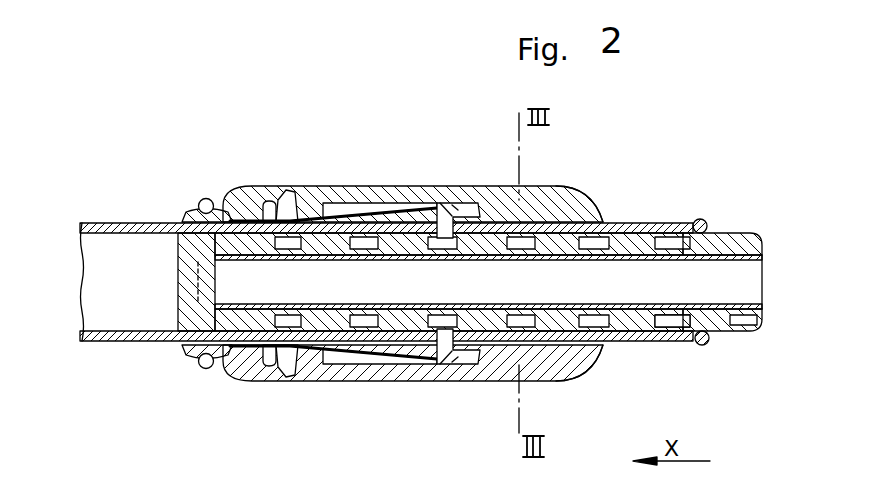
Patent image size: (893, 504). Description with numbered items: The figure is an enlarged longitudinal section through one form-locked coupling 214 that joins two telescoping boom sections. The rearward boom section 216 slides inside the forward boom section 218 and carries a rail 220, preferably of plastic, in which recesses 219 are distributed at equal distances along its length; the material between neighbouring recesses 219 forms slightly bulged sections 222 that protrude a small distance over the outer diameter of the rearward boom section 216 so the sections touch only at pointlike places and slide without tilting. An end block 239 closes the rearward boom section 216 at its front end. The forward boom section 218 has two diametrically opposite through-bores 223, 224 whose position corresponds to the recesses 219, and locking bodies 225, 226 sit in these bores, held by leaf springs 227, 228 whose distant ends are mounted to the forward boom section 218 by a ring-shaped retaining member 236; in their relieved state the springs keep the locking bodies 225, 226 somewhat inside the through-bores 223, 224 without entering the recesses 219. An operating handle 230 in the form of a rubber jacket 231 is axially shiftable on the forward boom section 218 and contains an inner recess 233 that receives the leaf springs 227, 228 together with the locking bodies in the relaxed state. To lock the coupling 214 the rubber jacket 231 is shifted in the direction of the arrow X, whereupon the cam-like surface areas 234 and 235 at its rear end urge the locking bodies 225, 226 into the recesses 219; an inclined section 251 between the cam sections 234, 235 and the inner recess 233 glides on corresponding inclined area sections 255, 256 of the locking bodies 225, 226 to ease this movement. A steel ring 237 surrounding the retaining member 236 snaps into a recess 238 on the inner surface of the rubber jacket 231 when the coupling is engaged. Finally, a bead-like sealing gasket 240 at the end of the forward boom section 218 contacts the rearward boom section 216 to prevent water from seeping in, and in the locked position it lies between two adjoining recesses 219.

The form-locked coupling 214 is at (267, 188).
The rearward boom section 216 is at (743, 257).
The forward boom section 218 is at (102, 231).
The recesses 219 is at (668, 322).
The rail 220 is at (713, 240).
The bulged sections 222 is at (640, 240).
The through-bore 223 is at (457, 362).
The through-bore 224 is at (456, 212).
The locking body 225 is at (418, 365).
The locking body 226 is at (438, 212).
The leaf spring 227 is at (368, 365).
The leaf spring 228 is at (383, 205).
The operating handle 230 is at (232, 382).
The rubber jacket 231 is at (299, 383).
The inner recess 233 is at (345, 194).
The surface area (cam section) 234 is at (590, 195).
The surface area (cam section) 235 is at (588, 370).
The ring-shaped retaining member 236 is at (217, 205).
The steel ring 237 is at (200, 203).
The recess 238 is at (291, 200).
The end block 239 is at (178, 310).
The sealing gasket 240 is at (703, 218).
The inclined section 251 is at (500, 183).
The inclined area section 255 is at (452, 205).
The inclined area section 256 is at (448, 368).